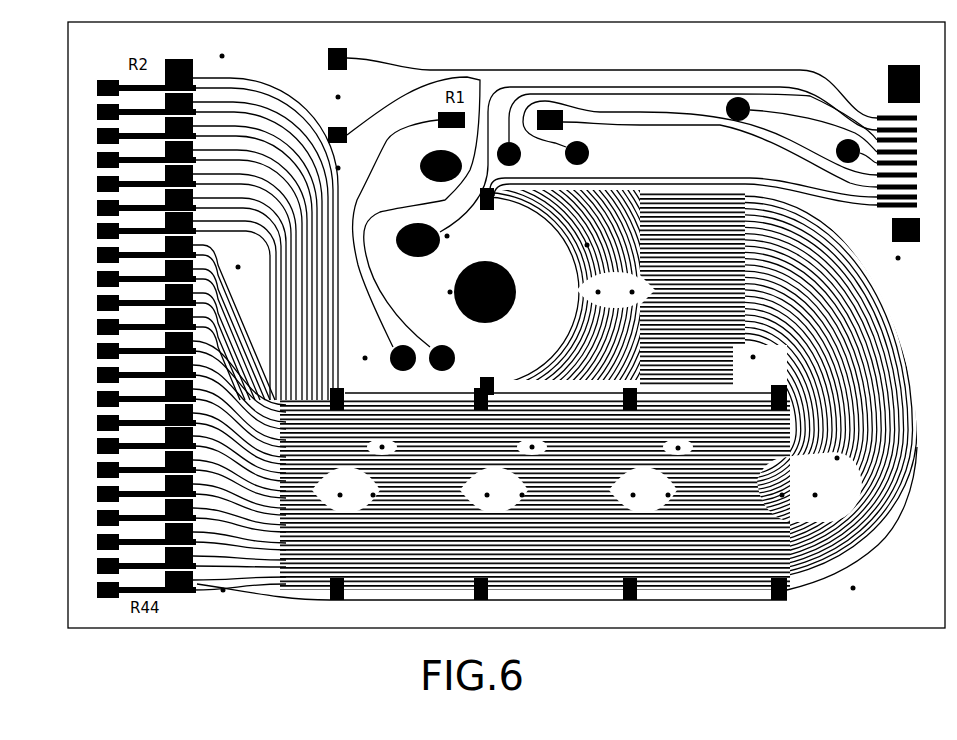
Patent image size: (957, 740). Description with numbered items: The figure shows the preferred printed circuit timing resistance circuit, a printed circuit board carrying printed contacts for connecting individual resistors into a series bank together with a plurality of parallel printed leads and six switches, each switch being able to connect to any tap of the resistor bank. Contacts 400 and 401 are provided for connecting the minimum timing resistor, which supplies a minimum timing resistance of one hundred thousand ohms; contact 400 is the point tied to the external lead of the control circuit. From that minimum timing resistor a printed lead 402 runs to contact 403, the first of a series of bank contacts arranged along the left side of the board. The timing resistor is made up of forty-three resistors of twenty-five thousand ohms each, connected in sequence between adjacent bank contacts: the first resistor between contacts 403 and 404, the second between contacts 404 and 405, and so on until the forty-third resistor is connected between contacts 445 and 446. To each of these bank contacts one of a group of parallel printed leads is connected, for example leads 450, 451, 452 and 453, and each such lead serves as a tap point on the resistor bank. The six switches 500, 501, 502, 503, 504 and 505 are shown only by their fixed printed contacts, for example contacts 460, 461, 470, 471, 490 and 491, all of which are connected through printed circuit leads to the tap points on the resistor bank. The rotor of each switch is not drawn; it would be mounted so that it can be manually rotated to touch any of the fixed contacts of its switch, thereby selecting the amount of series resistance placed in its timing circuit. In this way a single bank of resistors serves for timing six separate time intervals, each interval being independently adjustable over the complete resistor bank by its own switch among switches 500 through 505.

The contact 400 is at (565, 122).
The contact 401 is at (437, 113).
The lead 402 is at (370, 160).
The contact 403 is at (197, 68).
The contact 404 is at (97, 92).
The contact 405 is at (222, 92).
The contact 445 is at (205, 590).
The contact 446 is at (112, 598).
The parallel printed lead 450 is at (250, 120).
The parallel printed lead 451 is at (268, 137).
The parallel printed lead 452 is at (286, 153).
The parallel printed lead 453 is at (300, 176).
The fixed printed contact 460 is at (333, 395).
The fixed printed contact 461 is at (330, 385).
The fixed printed contact 470 is at (458, 392).
The fixed printed contact 471 is at (463, 390).
The fixed printed contact 490 is at (498, 375).
The fixed printed contact 491 is at (508, 380).
The switch 500 is at (355, 493).
The switch 501 is at (500, 493).
The switch 502 is at (650, 493).
The switch 503 is at (799, 493).
The switch 504 is at (645, 290).
The switch 505 is at (494, 253).